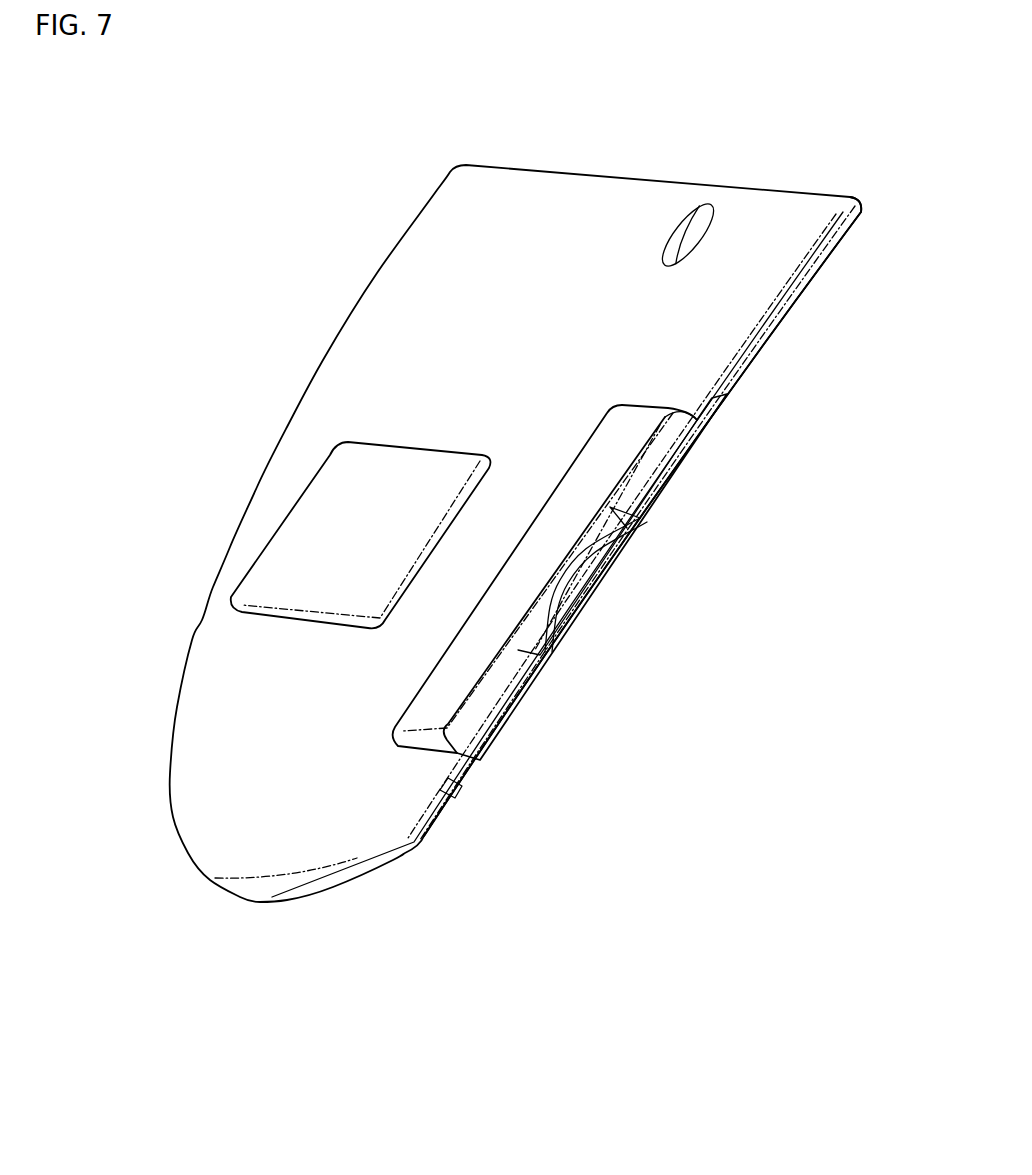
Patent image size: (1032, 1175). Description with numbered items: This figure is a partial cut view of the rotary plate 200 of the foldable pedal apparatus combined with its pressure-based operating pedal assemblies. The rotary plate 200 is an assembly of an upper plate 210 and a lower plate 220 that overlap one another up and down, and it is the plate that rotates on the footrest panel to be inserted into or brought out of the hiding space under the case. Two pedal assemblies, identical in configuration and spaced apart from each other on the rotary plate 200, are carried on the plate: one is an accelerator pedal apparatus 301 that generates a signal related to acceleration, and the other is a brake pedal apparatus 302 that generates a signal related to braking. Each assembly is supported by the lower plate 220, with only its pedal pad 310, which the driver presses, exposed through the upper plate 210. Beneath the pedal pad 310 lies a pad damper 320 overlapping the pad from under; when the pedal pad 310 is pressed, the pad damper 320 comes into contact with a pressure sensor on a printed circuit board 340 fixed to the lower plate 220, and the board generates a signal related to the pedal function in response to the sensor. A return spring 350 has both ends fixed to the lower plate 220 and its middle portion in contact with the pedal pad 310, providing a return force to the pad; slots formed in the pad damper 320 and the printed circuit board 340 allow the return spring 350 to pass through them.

The rotary plate 200 is at (362, 270).
The upper plate 210 is at (590, 197).
The lower plate 220 is at (772, 337).
The accelerator pedal apparatus 301 is at (397, 764).
The brake pedal apparatus 302 is at (300, 477).
The pedal pad 310 is at (283, 560).
The pad damper 320 is at (487, 710).
The printed circuit board 340 is at (462, 785).
The return spring 350 is at (545, 630).